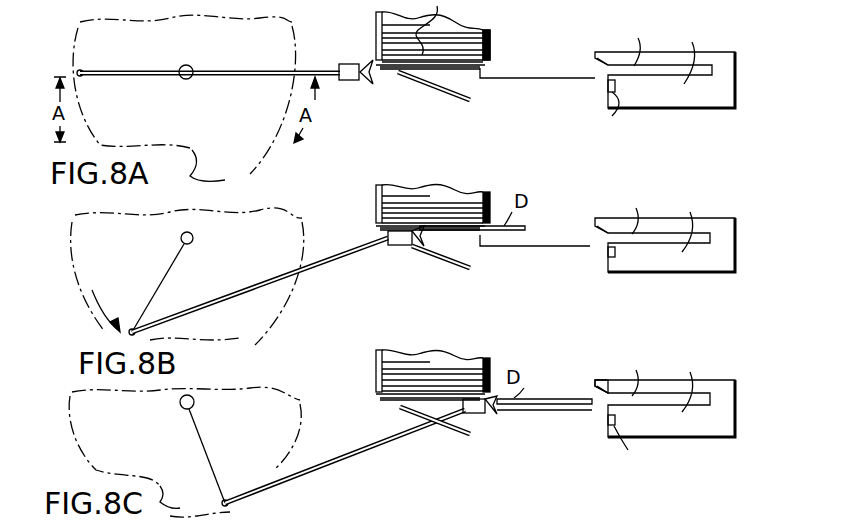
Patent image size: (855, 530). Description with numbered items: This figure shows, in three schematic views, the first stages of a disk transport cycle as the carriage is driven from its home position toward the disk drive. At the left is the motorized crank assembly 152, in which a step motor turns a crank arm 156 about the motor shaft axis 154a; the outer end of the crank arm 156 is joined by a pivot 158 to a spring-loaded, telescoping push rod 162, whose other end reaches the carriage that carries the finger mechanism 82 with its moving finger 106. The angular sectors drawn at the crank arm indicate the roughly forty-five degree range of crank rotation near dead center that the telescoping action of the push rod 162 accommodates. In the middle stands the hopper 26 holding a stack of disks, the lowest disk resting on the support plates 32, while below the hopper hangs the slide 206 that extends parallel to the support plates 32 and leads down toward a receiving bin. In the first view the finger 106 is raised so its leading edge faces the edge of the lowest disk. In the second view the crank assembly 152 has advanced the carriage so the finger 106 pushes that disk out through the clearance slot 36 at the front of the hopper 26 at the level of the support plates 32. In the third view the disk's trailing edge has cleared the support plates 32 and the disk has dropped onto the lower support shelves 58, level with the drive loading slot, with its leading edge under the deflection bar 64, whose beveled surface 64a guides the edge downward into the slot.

In FIG. 8A, the hopper 26 is at (492, 36).
In FIG. 8B, the hopper 26 is at (378, 196).
In FIG. 8C, the hopper 26 is at (378, 364).
In FIG. 8A, the support plates 32 is at (455, 70).
In FIG. 8B, the support plates 32 is at (386, 229).
In FIG. 8C, the support plates 32 is at (384, 402).
In FIG. 8A, the diskette clearance slot 36 is at (492, 62).
In FIG. 8B, the diskette clearance slot 36 is at (490, 224).
In FIG. 8C, the diskette clearance slot 36 is at (490, 392).
In FIG. 8A, the support shelves 58 is at (530, 80).
In FIG. 8B, the support shelves 58 is at (520, 248).
In FIG. 8C, the support shelves 58 is at (558, 414).
In FIG. 8A, the deflection bar 64 is at (598, 48).
In FIG. 8B, the deflection bar 64 is at (598, 218).
In FIG. 8C, the deflection bar 64 is at (598, 380).
In FIG. 8C, the beveled surface 64a is at (594, 384).
In FIG. 8A, the finger mechanism 82 is at (348, 82).
In FIG. 8B, the finger mechanism 82 is at (400, 248).
In FIG. 8C, the finger mechanism 82 is at (482, 416).
In FIG. 8A, the moving finger 106 is at (372, 80).
In FIG. 8B, the moving finger 106 is at (420, 250).
In FIG. 8C, the moving finger 106 is at (500, 412).
In FIG. 8A, the motorized crank assembly 152 is at (68, 40).
In FIG. 8B, the motorized crank assembly 152 is at (97, 331).
In FIG. 8C, the motorized crank assembly 152 is at (172, 512).
In FIG. 8A, the crank pin 154a is at (191, 66).
In FIG. 8B, the crank pin 154a is at (194, 242).
In FIG. 8C, the crank pin 154a is at (194, 408).
In FIG. 8B, the crank arm 156 is at (164, 276).
In FIG. 8C, the crank arm 156 is at (202, 448).
In FIG. 8A, the pivot 158 is at (83, 70).
In FIG. 8B, the pivot 158 is at (130, 326).
In FIG. 8C, the pivot 158 is at (228, 498).
In FIG. 8A, the push rod 162 is at (152, 77).
In FIG. 8B, the push rod 162 is at (200, 304).
In FIG. 8C, the push rod 162 is at (292, 480).
In FIG. 8A, the slide 206 is at (442, 92).
In FIG. 8B, the slide 206 is at (456, 270).
In FIG. 8C, the slide 206 is at (408, 418).